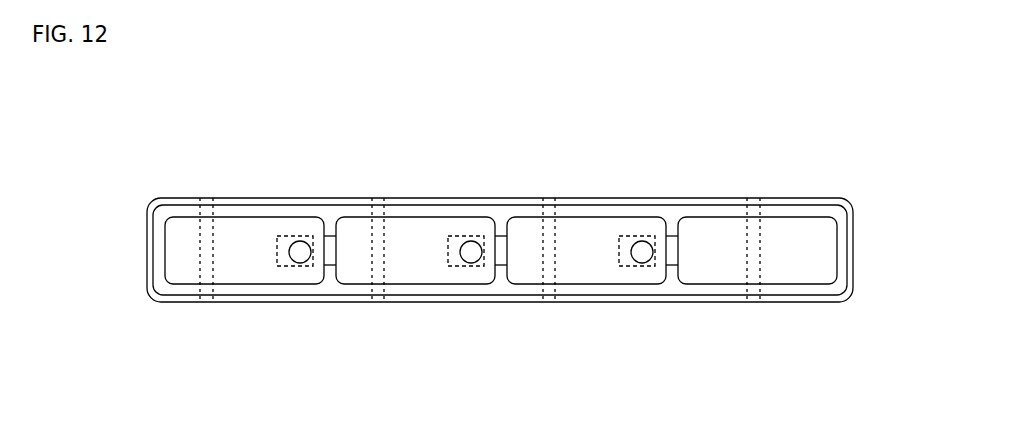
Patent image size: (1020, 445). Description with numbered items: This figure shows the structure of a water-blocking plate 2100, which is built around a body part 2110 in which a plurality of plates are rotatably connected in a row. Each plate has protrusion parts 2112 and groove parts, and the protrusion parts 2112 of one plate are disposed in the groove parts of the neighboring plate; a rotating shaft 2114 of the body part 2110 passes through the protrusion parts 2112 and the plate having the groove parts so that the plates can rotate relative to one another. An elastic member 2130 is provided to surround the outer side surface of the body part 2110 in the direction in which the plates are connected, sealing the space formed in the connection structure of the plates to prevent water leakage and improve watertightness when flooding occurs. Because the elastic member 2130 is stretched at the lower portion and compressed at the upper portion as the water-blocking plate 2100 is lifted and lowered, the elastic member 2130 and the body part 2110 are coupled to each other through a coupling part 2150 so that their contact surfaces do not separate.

The water-blocking plate 2100 is at (179, 119).
The body part 2110 is at (247, 241).
The protrusion part 2112 is at (329, 250).
The rotating shaft 2114 is at (303, 264).
The elastic member 2130 is at (178, 302).
The coupling part 2150 is at (220, 268).